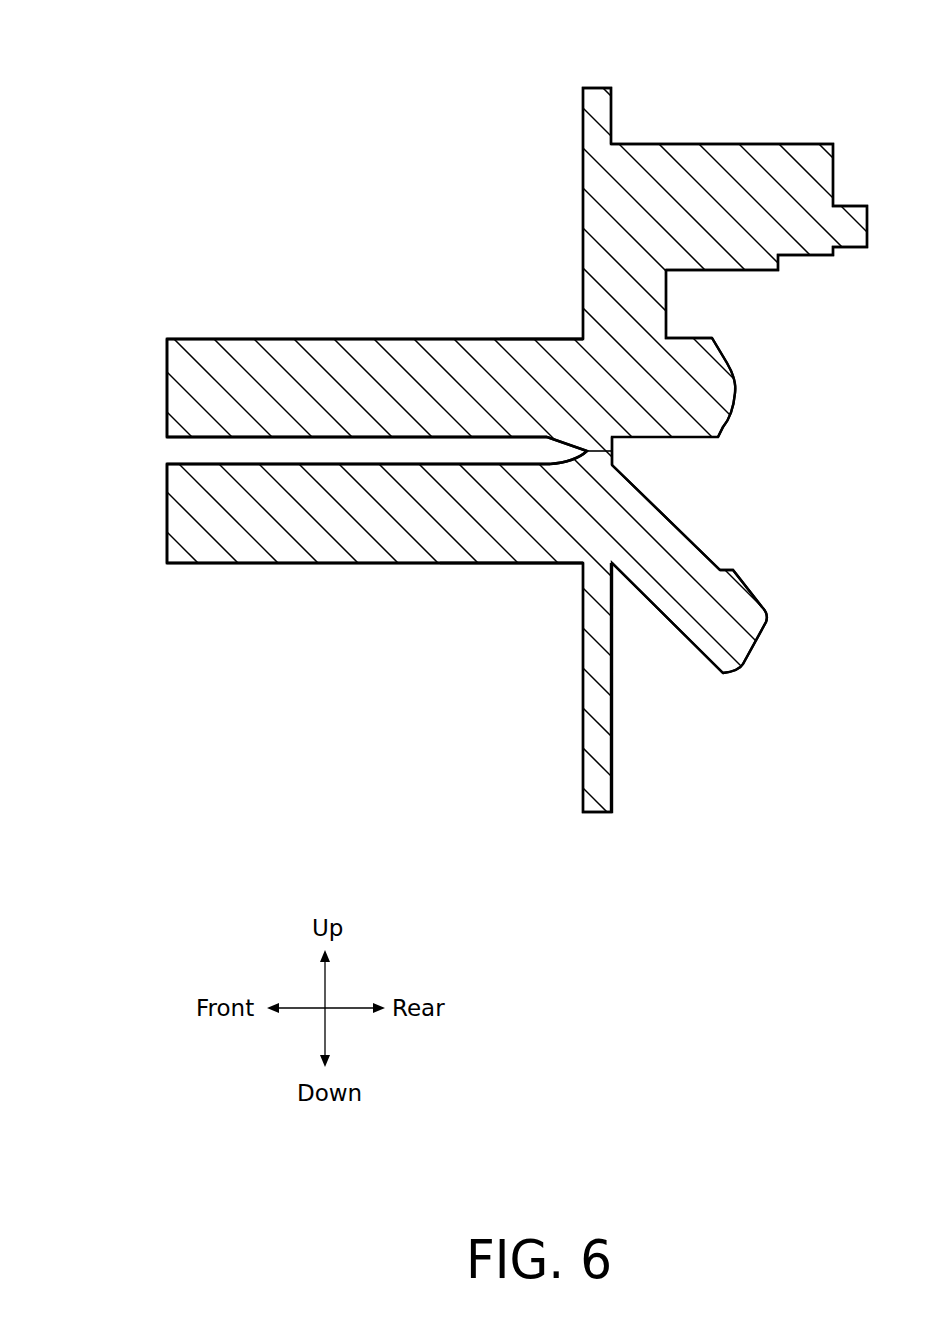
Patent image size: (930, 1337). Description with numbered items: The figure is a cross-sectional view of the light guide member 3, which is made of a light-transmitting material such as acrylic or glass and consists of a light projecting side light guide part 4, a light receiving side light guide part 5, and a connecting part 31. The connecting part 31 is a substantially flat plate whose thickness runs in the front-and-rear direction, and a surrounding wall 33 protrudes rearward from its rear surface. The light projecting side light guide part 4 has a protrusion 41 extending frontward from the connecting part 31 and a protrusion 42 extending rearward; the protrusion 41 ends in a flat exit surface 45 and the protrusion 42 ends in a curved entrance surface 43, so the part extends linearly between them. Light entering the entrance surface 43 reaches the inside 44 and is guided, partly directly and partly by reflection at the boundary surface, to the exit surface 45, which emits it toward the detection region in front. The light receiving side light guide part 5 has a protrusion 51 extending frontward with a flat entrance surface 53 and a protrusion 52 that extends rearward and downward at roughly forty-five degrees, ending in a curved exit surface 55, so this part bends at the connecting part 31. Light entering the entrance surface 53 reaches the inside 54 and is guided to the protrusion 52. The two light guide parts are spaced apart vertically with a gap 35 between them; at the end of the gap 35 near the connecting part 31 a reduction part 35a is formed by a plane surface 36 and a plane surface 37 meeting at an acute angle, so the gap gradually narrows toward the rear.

The light guide member 3 is at (275, 108).
The connecting part 31 is at (583, 105).
The surrounding wall 33 is at (722, 144).
The light projecting side light guide part 4 is at (305, 338).
The inside of the light projecting side light guide part 44 is at (440, 338).
The exit surface 45 is at (167, 355).
The protrusion 41 is at (525, 338).
The plane surface 36 is at (547, 437).
The protrusion 42 is at (690, 338).
The entrance surface 43 is at (737, 385).
The gap 35 is at (180, 451).
The reduction part 35a is at (612, 452).
The light receiving side light guide part 5 is at (325, 563).
The entrance surface 53 is at (167, 525).
The inside of the light receiving side light guide part 54 is at (392, 538).
The protrusion 51 is at (485, 563).
The plane surface 37 is at (548, 465).
The protrusion 52 is at (693, 535).
The exit surface 55 is at (768, 617).